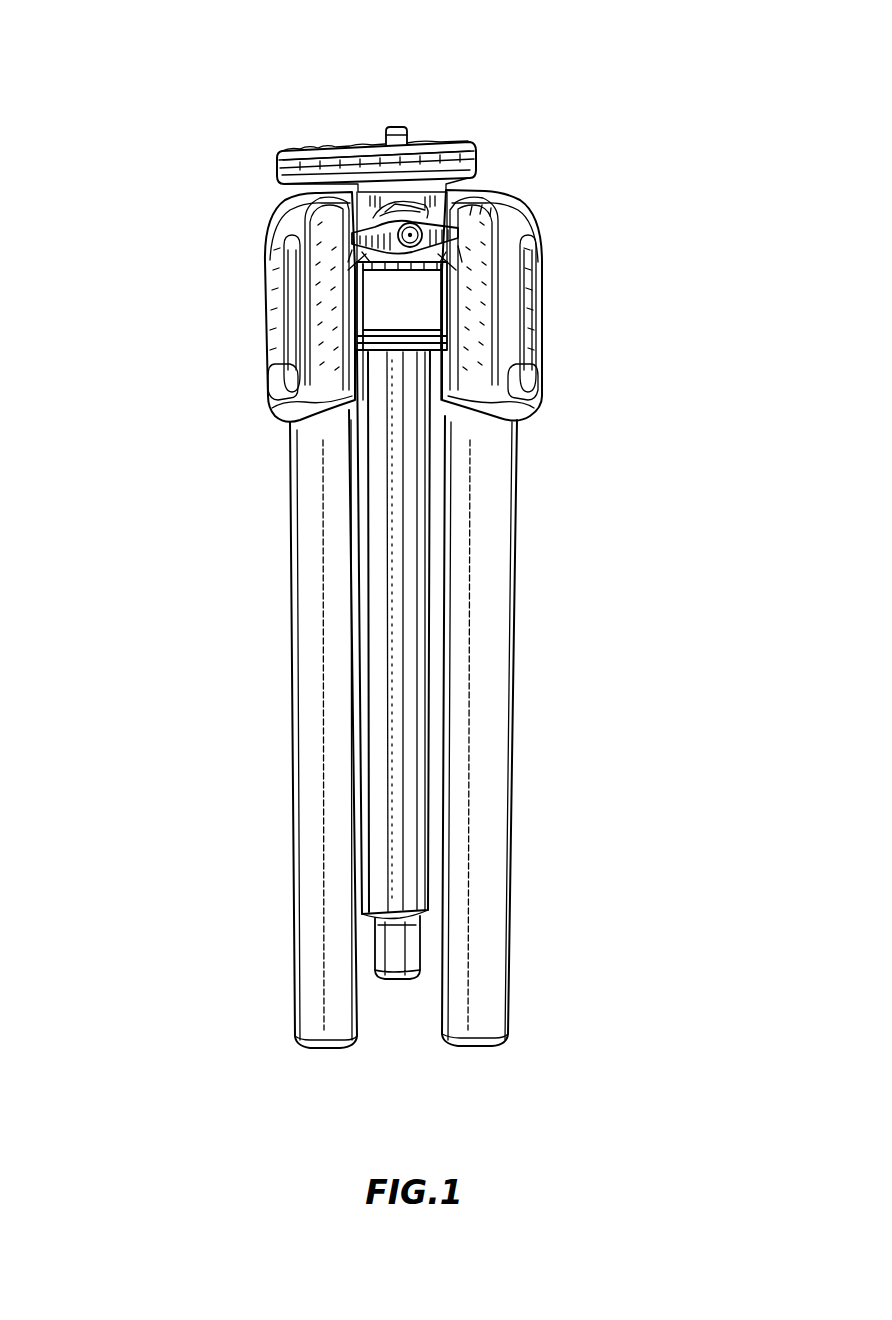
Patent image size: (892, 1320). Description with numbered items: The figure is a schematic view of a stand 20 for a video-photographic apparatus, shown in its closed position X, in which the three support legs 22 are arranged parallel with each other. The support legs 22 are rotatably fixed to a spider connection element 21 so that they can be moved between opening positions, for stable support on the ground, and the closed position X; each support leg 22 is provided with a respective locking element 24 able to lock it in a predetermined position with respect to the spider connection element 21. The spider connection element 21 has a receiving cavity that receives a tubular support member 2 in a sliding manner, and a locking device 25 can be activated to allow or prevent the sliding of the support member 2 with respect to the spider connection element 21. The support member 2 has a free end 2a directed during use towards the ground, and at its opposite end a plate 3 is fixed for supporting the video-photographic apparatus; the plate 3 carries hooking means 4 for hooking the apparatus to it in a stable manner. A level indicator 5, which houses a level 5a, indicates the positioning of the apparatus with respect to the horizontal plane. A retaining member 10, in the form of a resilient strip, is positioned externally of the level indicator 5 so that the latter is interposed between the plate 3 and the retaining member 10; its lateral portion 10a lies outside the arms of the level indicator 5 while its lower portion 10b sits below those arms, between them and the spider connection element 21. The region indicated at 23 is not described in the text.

The level indicator 5 is at (241, 90).
The level 5a is at (303, 150).
The hooking means 4 is at (402, 135).
The plate 3 is at (468, 140).
The retaining member 10 is at (246, 168).
The lateral portion 10a is at (478, 162).
The lower portion 10b is at (290, 182).
The spider connection element 21 is at (465, 196).
The locking device 25 is at (440, 240).
The locking element 24 is at (275, 327).
The stand 20 is at (181, 291).
The center column guide 23 is at (421, 360).
The support legs 22 is at (316, 855).
The tubular support member 2 is at (385, 790).
The free end 2a is at (423, 912).
The closed position X is at (176, 633).